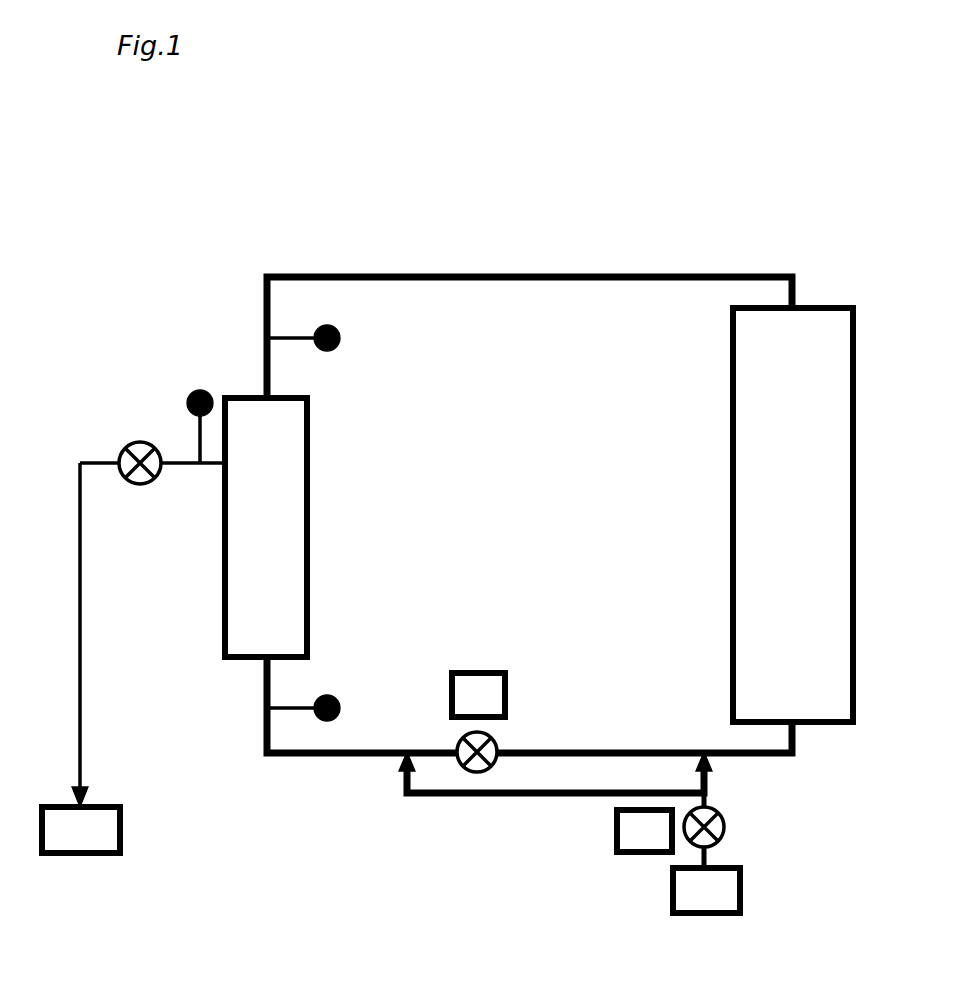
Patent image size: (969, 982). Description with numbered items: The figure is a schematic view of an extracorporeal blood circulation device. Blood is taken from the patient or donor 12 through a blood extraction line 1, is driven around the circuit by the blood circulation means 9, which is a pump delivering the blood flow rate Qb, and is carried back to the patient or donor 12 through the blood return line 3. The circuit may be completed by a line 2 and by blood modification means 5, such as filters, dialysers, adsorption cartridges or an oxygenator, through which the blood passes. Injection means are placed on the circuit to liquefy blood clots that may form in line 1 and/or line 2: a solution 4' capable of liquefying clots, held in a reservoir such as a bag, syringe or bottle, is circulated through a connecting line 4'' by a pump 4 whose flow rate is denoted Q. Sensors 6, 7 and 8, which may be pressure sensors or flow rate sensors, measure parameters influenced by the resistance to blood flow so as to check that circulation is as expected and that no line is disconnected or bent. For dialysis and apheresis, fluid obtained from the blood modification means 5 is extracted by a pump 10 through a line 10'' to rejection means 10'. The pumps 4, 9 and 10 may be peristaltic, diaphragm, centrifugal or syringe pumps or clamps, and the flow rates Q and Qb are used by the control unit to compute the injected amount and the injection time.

The line 1 is at (632, 751).
The line 2 is at (345, 756).
The blood return line 3 is at (392, 276).
The pump 4 is at (706, 829).
The solution 4' is at (669, 895).
The connecting line 4'' is at (593, 783).
The blood modification means 5 is at (309, 533).
The sensor 6 is at (340, 705).
The sensor 7 is at (340, 343).
The sensor 8 is at (198, 390).
The means arranged to circulate the blood 9 is at (512, 722).
The pump 10 is at (152, 427).
The rejection means 10' is at (81, 869).
The line 10'' is at (120, 635).
The patient or donor 12 is at (817, 303).
The flow rate Q is at (644, 831).
The blood flow rate Qb is at (478, 695).